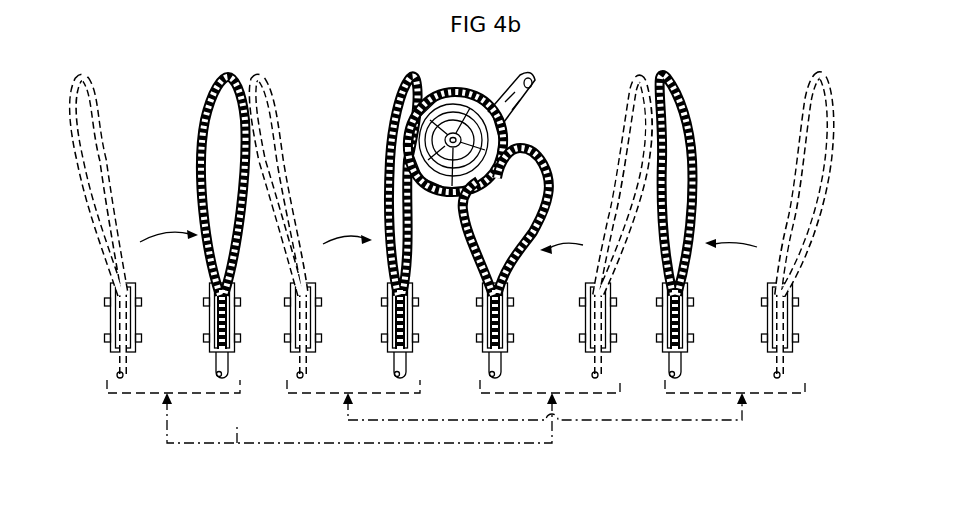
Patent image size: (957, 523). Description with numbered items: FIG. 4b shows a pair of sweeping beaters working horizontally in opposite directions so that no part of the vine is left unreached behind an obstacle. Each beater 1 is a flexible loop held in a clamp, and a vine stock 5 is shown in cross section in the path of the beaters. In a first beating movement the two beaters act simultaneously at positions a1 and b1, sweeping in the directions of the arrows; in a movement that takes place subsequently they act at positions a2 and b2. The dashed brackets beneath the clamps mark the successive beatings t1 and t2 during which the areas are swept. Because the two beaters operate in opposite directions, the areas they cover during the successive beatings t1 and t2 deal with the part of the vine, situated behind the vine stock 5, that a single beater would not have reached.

The beater 1 is at (672, 82).
The vine stock 5 is at (470, 92).
The first beating position of beater a a1 is at (704, 226).
The second beating position of beater a a2 is at (489, 225).
The first beating position of beater b b1 is at (376, 227).
The second beating position of beater b b2 is at (200, 227).
The first beating t1 is at (545, 423).
The second beating t2 is at (359, 435).